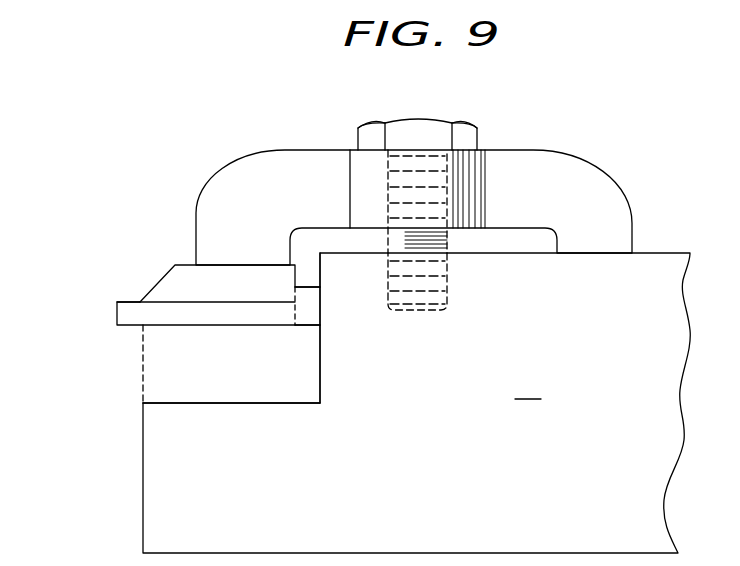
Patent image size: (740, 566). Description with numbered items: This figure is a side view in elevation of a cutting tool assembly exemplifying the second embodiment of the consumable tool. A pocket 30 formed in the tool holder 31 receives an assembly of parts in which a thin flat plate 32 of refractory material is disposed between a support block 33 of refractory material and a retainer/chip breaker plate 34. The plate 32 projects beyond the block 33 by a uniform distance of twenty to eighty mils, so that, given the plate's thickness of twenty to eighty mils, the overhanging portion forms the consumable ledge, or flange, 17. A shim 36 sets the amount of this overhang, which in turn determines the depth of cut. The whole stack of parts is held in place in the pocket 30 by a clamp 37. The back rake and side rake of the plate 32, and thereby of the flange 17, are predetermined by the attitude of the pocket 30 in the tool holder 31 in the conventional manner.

The ledge 17 is at (133, 327).
The pocket 30 is at (313, 361).
The tool holder 31 is at (416, 403).
The thin flat plate 32 is at (130, 300).
The support block 33 is at (233, 374).
The retainer/chip breaker plate 34 is at (170, 266).
The shim 36 is at (308, 305).
The clamp 37 is at (302, 150).